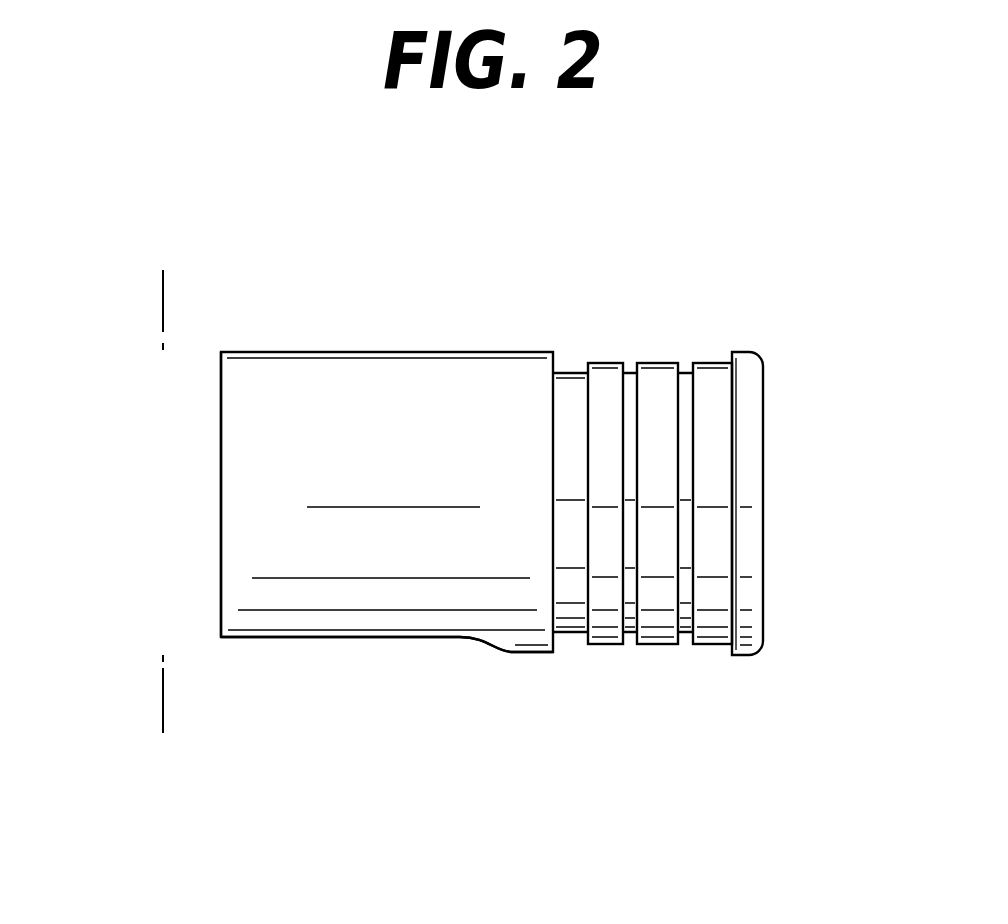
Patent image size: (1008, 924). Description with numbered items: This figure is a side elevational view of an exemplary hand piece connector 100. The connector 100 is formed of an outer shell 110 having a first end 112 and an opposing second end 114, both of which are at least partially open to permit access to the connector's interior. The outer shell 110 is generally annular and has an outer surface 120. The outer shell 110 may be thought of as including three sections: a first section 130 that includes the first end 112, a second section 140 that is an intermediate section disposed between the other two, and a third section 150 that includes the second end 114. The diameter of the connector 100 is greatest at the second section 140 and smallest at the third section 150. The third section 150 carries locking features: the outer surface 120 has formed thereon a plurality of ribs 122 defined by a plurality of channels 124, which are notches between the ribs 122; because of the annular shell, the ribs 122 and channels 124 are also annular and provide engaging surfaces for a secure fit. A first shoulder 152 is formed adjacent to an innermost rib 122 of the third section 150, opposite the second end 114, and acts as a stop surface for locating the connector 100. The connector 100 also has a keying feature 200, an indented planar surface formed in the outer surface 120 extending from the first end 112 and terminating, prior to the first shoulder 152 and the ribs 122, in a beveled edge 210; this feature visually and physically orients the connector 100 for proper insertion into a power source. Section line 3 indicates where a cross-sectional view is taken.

The section line 3- 3 is at (160, 281).
The hand piece connector 100 is at (408, 240).
The outer shell 110 is at (372, 378).
The first end 112 is at (220, 400).
The second end 114 is at (762, 410).
The outer surface 120 is at (358, 603).
The ribs 122 is at (655, 378).
The channels 124 is at (630, 372).
The first section 130 is at (243, 638).
The second section 140 is at (536, 352).
The third section 150 is at (658, 646).
The first shoulder 152 is at (560, 650).
The keying feature 200 is at (435, 640).
The beveled edge 210 is at (493, 647).